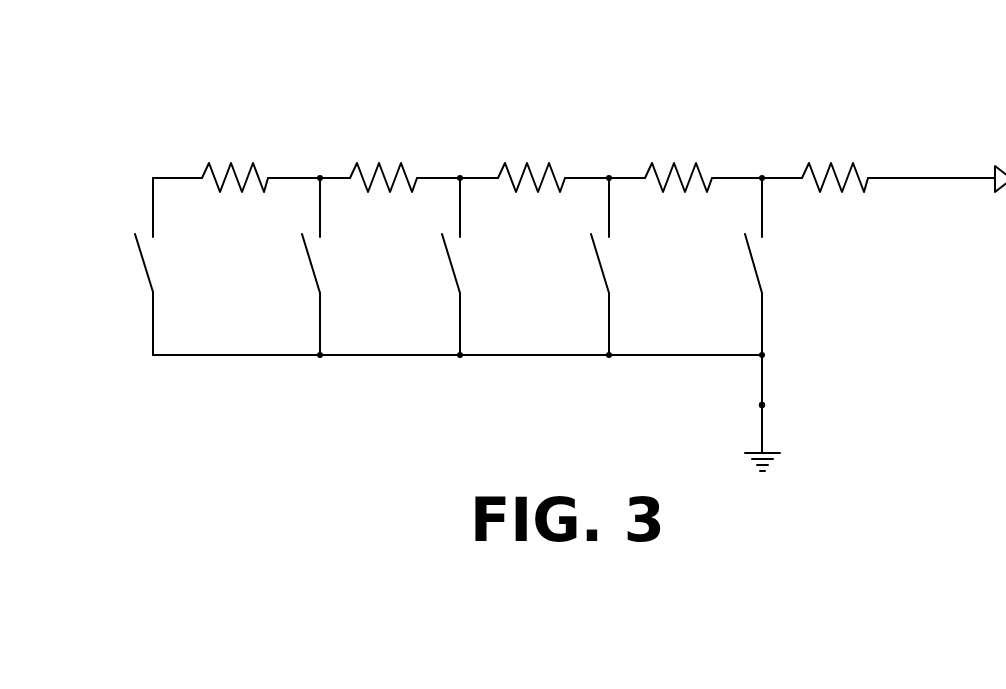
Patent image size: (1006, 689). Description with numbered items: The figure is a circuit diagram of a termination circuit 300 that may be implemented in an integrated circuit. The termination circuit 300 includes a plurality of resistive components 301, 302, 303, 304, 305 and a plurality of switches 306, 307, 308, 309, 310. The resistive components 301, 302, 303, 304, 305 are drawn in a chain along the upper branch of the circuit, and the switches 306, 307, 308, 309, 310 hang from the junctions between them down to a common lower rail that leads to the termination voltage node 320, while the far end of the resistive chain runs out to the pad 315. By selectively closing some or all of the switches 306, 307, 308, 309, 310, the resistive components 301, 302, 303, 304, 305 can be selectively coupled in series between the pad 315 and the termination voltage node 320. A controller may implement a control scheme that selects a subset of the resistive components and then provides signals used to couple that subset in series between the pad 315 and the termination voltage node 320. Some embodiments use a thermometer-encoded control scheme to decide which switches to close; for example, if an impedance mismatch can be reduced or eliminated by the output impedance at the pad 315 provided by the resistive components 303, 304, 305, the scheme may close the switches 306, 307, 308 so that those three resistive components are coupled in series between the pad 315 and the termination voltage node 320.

The termination circuit 300 is at (775, 75).
The resistive component 301 is at (232, 163).
The resistive component 302 is at (380, 163).
The resistive component 303 is at (528, 163).
The resistive component 304 is at (674, 163).
The resistive component 305 is at (831, 163).
The switch 306 is at (147, 275).
The switch 307 is at (313, 275).
The switch 308 is at (455, 276).
The switch 309 is at (602, 275).
The switch 310 is at (755, 276).
The pad 315 is at (1005, 147).
The termination voltage node 320 is at (766, 405).